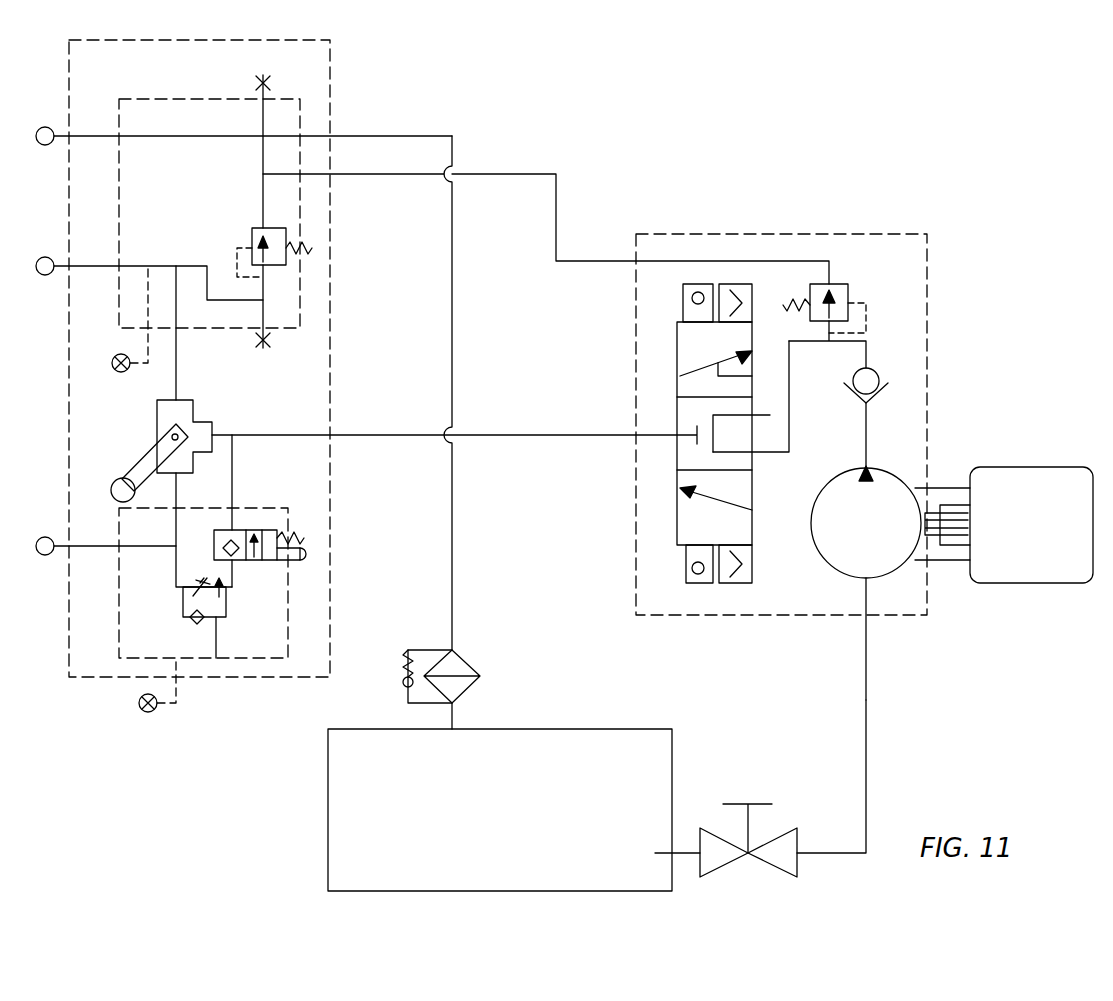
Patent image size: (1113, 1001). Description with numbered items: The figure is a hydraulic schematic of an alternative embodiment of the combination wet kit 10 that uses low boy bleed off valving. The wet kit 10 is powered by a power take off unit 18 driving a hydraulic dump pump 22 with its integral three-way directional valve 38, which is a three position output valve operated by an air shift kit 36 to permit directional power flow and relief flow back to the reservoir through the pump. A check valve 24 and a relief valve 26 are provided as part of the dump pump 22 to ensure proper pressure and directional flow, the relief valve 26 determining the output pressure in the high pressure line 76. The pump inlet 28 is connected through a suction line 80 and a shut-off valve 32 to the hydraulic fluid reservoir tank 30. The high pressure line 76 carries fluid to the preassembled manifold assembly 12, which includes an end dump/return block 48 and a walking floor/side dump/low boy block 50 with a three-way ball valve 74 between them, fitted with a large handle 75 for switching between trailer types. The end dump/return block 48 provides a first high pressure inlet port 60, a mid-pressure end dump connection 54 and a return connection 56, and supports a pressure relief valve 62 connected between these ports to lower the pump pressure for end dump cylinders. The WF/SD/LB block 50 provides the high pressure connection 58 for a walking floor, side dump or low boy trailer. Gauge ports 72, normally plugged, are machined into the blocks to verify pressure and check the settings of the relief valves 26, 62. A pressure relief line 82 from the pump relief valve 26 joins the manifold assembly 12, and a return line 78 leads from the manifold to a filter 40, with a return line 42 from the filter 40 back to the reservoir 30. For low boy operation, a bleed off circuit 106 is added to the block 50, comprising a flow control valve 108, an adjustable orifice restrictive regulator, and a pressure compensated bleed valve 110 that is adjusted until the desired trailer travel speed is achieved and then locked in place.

The wet kit 10 is at (622, 80).
The manifold unit 12 is at (313, 50).
The power take off unit 18 is at (998, 495).
The hydraulic pump 22 is at (898, 565).
The check valve 24 is at (880, 375).
The relief valve 26 is at (830, 284).
The inlet 28 is at (868, 628).
The hydraulic fluid reservoir tank 30 is at (565, 727).
The shut-off valve 32 is at (790, 840).
The air shift kit 36 is at (695, 584).
The three-way directional valve 38 is at (677, 365).
The filter 40 is at (458, 655).
The return line 42 is at (465, 720).
The end dump/return block 48 is at (300, 105).
The walking floor/side dump/low boy manifold block 50 is at (276, 532).
The end dump connection 54 is at (37, 273).
The return connection 56 is at (37, 143).
The connection for walking floor or side dump or low boy trailer 58 is at (37, 553).
The first high pressure inlet port 60 is at (182, 331).
The pressure relief valve 62 is at (286, 230).
The gauge port 72 is at (112, 363).
The three-way valve 74 is at (212, 424).
The handle 75 is at (150, 447).
The high pressure line 76 is at (585, 437).
The return line 78 is at (453, 242).
The suction line 80 is at (868, 705).
The pressure relief line 82 is at (507, 172).
The bleed off circuit 106 is at (276, 597).
The flow control valve 108 is at (216, 660).
The bleed valve 110 is at (254, 530).